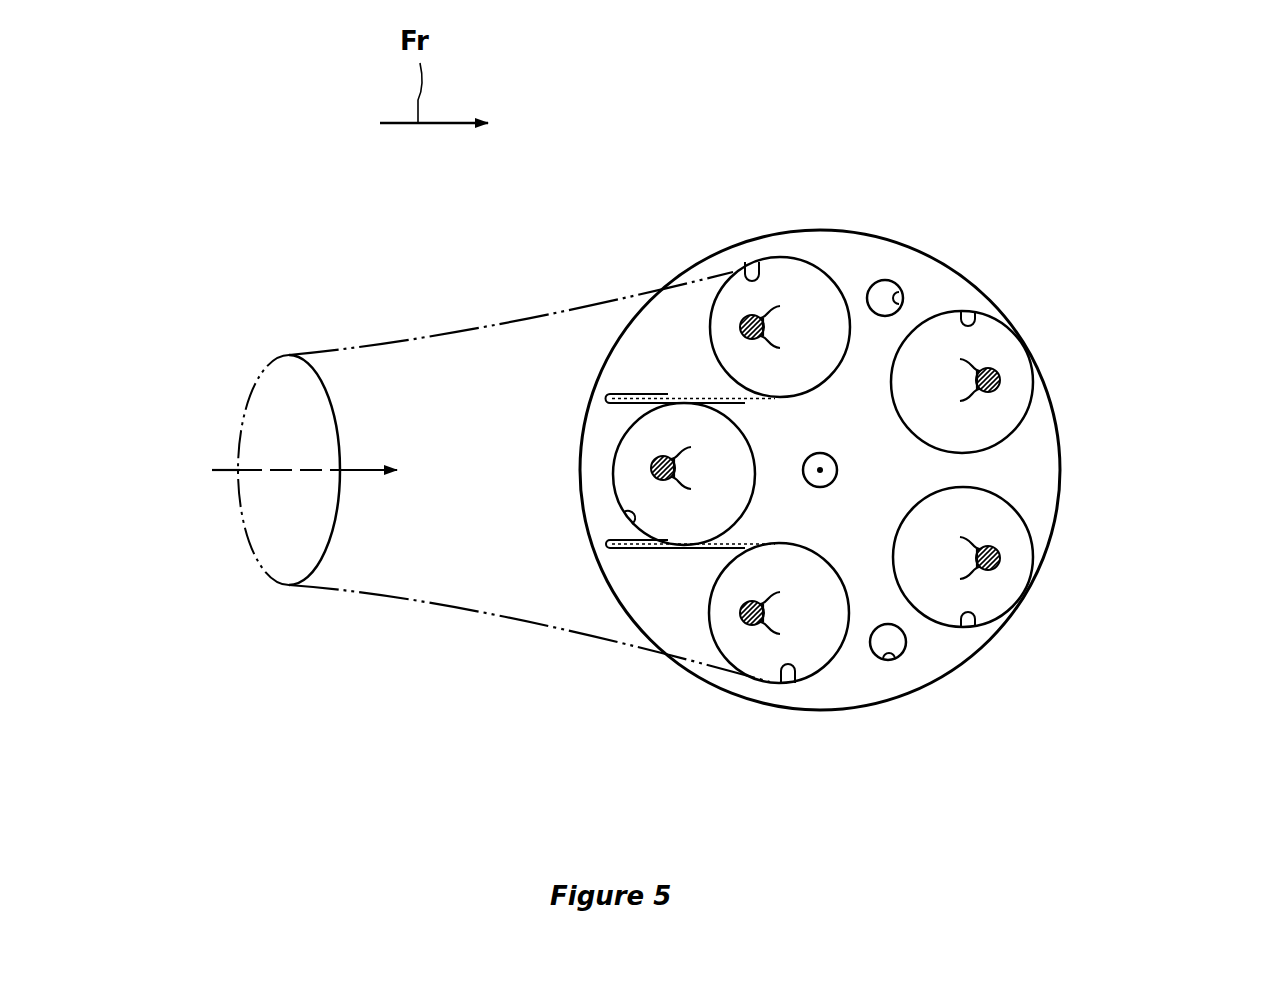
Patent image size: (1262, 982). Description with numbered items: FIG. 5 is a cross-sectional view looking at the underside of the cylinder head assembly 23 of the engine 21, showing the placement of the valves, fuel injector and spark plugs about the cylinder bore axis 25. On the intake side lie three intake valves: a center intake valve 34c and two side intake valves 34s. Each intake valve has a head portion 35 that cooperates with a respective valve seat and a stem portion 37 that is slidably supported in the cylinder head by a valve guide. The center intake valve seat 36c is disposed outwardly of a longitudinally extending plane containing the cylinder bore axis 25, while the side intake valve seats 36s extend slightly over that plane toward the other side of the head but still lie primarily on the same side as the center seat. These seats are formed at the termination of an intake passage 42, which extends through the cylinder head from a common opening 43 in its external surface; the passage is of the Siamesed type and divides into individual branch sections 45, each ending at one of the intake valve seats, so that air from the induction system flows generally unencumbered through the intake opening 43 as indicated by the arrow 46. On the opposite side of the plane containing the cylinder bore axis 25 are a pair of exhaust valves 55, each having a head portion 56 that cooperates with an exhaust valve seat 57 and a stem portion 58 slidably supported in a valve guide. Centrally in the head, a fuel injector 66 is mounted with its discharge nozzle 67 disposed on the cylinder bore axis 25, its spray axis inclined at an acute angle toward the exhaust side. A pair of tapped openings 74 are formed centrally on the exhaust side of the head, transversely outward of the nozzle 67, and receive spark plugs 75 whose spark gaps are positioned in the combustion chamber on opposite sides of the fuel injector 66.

The engine 21 is at (1090, 215).
The cylinder head assembly 23 is at (1135, 276).
The cylinder bore axis 25 is at (823, 470).
The side intake valves 34s is at (708, 303).
The center intake valve 34c is at (613, 467).
The head portion 35 is at (716, 612).
The side intake valve seats 36s is at (752, 262).
The center intake valve seat 36c is at (626, 514).
The stem portion 37 is at (756, 626).
The intake passage 42 is at (458, 580).
The common opening 43 is at (258, 514).
The branch sections 45 is at (664, 394).
The arrow 46 is at (253, 470).
The exhaust valves 55 is at (1034, 392).
The head portions 56 is at (1020, 556).
The exhaust valve seats 57 is at (975, 318).
The stem portions 58 is at (990, 573).
The fuel injector 66 is at (826, 490).
The discharge nozzle 67 is at (815, 453).
The tapped openings 74 is at (905, 297).
The spark plugs 75 is at (887, 281).